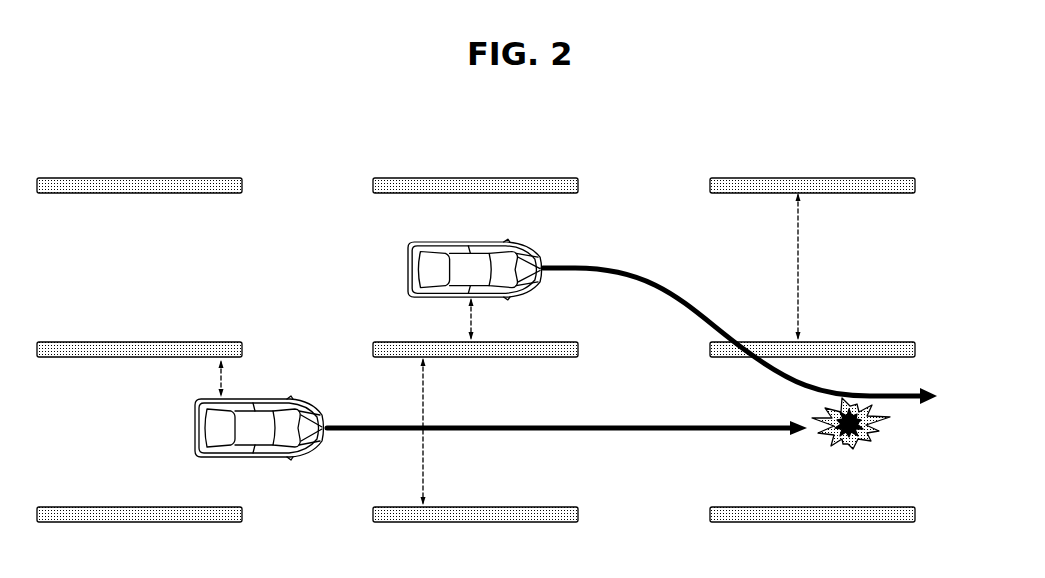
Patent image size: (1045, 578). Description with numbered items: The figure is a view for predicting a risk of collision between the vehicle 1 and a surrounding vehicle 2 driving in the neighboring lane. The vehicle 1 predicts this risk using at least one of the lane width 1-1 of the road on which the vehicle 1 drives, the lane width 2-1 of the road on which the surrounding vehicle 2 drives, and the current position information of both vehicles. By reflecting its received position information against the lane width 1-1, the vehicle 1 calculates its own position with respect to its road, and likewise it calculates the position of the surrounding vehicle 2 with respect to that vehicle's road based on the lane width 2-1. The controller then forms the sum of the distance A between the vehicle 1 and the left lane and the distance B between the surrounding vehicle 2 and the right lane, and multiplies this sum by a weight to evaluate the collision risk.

The vehicle 1 is at (258, 420).
The surrounding vehicle 2 is at (462, 260).
The lane width of the road on which the vehicle drives 1-1 is at (444, 431).
The lane width of the road on which the surrounding vehicle drives 2-1 is at (819, 266).
The distance between the vehicle and the left lane A is at (231, 378).
The distance between the surrounding vehicle and the right lane B is at (482, 319).